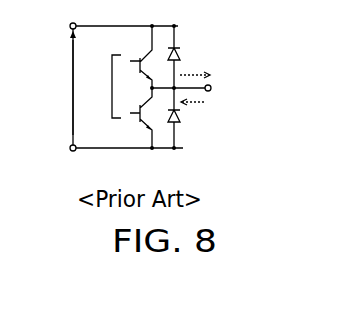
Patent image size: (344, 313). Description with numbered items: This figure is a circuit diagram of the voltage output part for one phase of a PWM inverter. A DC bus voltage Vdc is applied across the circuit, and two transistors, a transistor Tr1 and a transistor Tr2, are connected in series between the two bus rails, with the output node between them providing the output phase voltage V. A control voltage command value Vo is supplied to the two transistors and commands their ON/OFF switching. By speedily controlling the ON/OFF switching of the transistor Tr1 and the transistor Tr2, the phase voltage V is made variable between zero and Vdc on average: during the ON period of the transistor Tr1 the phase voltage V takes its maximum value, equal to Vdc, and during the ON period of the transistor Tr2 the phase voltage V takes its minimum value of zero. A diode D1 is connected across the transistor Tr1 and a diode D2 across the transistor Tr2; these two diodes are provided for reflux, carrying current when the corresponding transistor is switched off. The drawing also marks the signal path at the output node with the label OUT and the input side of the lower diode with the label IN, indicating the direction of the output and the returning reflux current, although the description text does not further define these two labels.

The DC bus voltage Vdc is at (59, 87).
The control voltage command value Vo is at (109, 86).
The transistor Tr1 is at (136, 57).
The transistor Tr2 is at (134, 118).
The diode D1 is at (180, 57).
The diode D2 is at (180, 118).
The output OUT is at (203, 68).
The input IN is at (199, 107).
The output phase voltage V is at (214, 91).